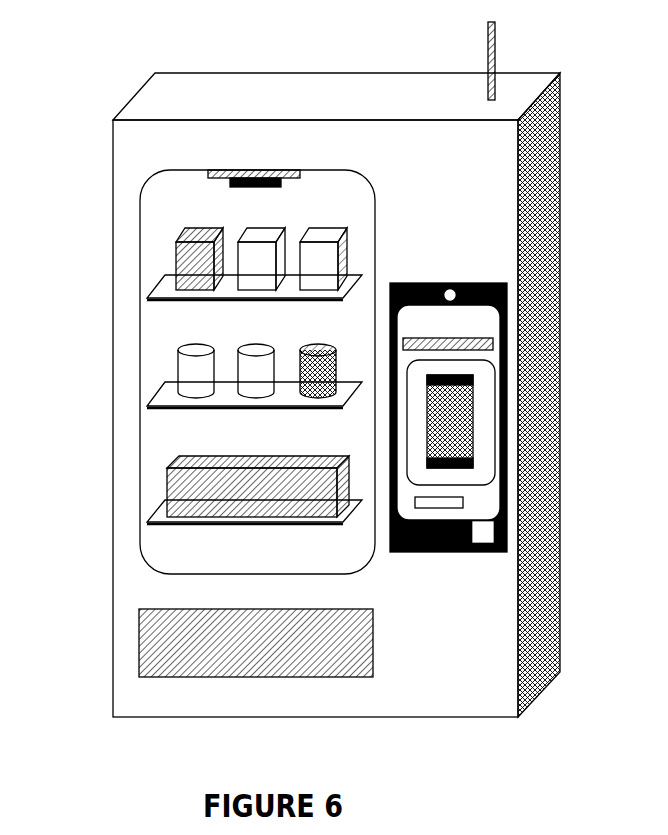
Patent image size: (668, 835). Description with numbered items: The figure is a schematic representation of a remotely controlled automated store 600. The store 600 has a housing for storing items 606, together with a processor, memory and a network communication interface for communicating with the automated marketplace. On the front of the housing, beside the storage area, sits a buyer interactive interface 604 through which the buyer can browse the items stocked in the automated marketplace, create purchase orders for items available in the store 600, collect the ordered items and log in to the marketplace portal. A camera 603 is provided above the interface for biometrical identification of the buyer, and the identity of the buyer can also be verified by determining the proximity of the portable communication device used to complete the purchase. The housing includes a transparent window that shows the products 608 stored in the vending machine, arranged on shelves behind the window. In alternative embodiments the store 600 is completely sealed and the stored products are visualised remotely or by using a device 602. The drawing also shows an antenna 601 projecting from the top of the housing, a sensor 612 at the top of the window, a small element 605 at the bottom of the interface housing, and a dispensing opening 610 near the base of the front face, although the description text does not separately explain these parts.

The remotely controlled automated store 600 is at (129, 97).
The antenna 601 is at (505, 60).
The device 602 is at (475, 327).
The camera 603 is at (494, 283).
The buyer interactive interface 604 is at (468, 433).
The card reader 605 is at (505, 525).
The items 606 is at (148, 333).
The products 608 is at (167, 255).
The product dispensing slot 610 is at (145, 627).
The camera sensor 612 is at (252, 176).